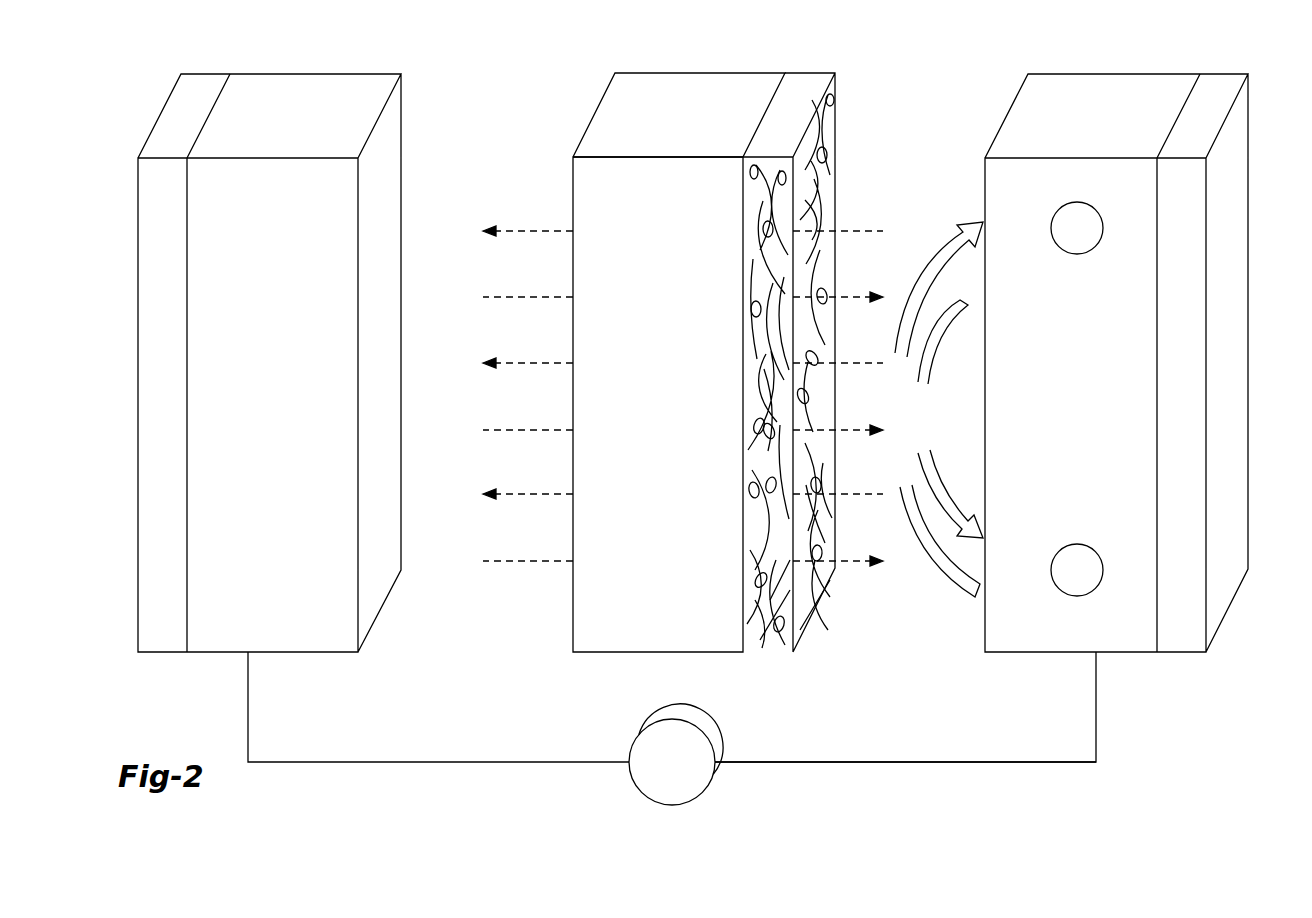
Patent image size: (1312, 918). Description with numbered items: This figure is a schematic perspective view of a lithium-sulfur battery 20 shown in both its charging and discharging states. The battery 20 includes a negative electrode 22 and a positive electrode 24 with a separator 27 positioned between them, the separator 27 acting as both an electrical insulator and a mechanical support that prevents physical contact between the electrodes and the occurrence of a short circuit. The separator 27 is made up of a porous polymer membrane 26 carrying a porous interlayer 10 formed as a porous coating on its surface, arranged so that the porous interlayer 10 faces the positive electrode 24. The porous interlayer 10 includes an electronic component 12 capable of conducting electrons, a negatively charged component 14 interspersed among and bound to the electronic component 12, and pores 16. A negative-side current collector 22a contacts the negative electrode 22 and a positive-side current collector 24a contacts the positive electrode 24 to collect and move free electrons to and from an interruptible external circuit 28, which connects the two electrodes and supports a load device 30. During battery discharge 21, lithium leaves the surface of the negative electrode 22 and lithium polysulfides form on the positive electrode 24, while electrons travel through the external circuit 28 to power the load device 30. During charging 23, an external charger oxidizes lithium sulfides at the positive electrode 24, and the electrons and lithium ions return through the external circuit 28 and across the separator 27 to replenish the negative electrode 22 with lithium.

The porous interlayer 10 is at (820, 338).
The electronic component 12 is at (830, 140).
The negatively charged component 14 is at (836, 100).
The pores 16 is at (826, 195).
The lithium-sulfur battery 20 is at (1258, 652).
The battery discharge 21 is at (857, 297).
The negative electrode 22 is at (278, 395).
The negative-side current collector 22a is at (160, 565).
The battery charging 23 is at (532, 231).
The positive electrode 24 is at (1088, 395).
The positive-side current collector 24a is at (1222, 192).
The porous polymer membrane 26 is at (598, 652).
The separator 27 is at (712, 75).
The external circuit 28 is at (958, 766).
The load device 30 is at (684, 765).